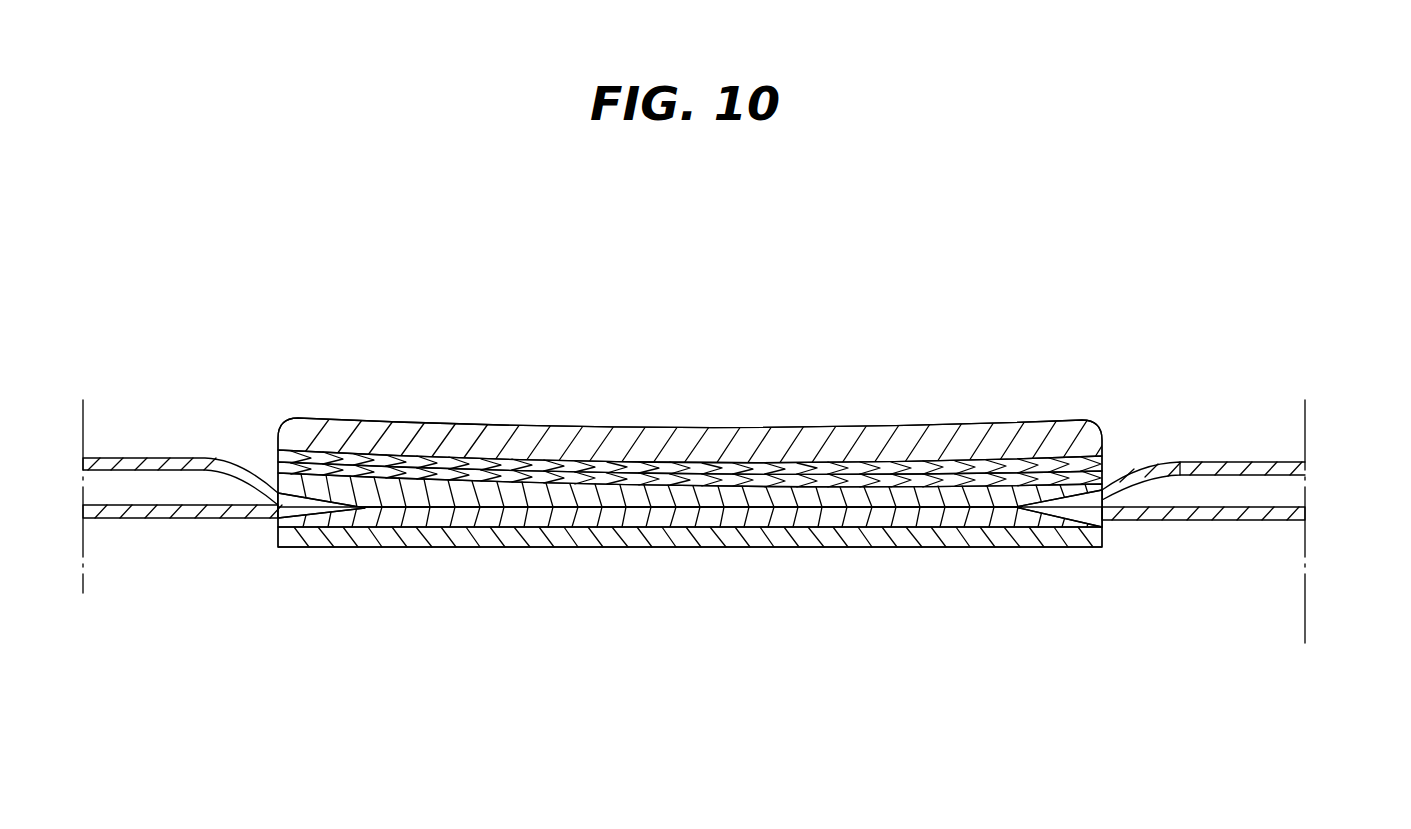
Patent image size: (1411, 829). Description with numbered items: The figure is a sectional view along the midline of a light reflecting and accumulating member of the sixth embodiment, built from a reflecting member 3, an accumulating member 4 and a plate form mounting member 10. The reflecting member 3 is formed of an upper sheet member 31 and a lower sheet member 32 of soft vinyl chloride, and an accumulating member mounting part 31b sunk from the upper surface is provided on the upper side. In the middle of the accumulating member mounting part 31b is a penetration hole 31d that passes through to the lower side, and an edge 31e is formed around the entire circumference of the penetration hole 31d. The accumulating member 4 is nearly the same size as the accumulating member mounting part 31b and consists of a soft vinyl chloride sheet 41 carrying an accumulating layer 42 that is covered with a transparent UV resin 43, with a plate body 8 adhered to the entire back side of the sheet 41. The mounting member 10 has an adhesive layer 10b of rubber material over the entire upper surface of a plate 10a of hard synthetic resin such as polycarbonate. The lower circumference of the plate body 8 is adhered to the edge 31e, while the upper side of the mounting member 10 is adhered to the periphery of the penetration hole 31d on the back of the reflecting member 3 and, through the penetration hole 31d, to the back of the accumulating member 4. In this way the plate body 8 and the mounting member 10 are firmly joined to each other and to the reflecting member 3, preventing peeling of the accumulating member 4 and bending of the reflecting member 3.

The reflecting member 3 is at (746, 514).
The accumulating member 4 is at (932, 243).
The plate body 8 is at (852, 500).
The mounting member 10 is at (690, 640).
The plate 10a is at (912, 535).
The adhesive layer 10b is at (865, 520).
The upper sheet member 31 is at (717, 489).
The accumulating member mounting part 31b is at (1103, 470).
The penetration hole 31d is at (570, 505).
The edge 31e is at (303, 505).
The lower sheet member 32 is at (1243, 520).
The soft vinyl chloride sheet 41 is at (808, 487).
The accumulating layer 42 is at (732, 466).
The transparent UV resin 43 is at (620, 445).